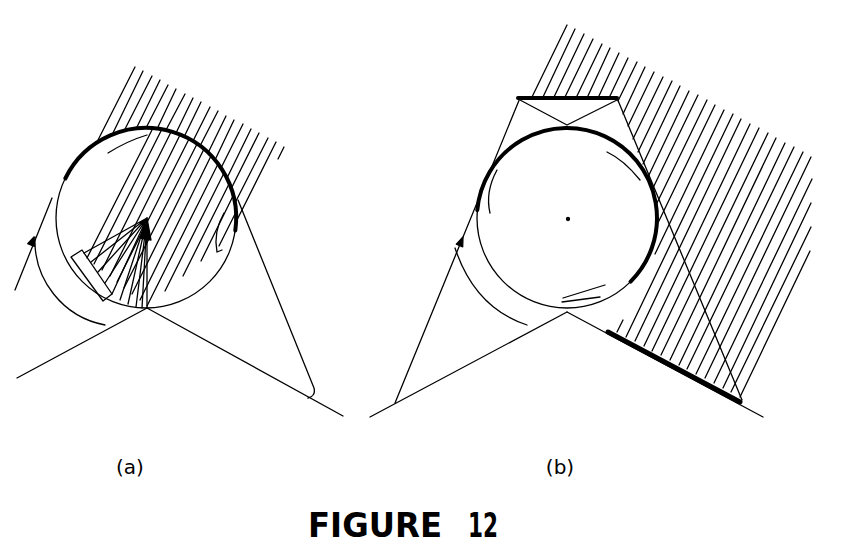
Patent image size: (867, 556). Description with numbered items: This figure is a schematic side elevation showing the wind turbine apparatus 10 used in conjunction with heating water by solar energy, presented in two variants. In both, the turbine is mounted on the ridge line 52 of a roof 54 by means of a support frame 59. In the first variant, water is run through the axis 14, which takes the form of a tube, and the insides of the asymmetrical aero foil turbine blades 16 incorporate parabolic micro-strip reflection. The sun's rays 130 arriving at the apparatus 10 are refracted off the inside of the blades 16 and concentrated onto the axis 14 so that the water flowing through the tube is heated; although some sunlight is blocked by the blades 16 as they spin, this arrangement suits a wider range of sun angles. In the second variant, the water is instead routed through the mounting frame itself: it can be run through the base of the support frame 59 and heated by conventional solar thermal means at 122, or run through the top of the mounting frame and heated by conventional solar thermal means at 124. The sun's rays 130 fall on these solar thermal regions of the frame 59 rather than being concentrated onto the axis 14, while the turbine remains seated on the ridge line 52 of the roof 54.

The apparatus 10 is at (72, 167).
The axis 14 is at (147, 218).
The asymmetrical aero foil turbine blades 16 is at (477, 219).
The ridge line 52 is at (147, 308).
The roof 54 is at (40, 368).
The support frame 59 is at (425, 330).
The conventional solar thermal means at mounting frame base 122 is at (743, 395).
The conventional solar thermal means at mounting frame top 124 is at (522, 95).
The sun's rays 130 is at (233, 128).